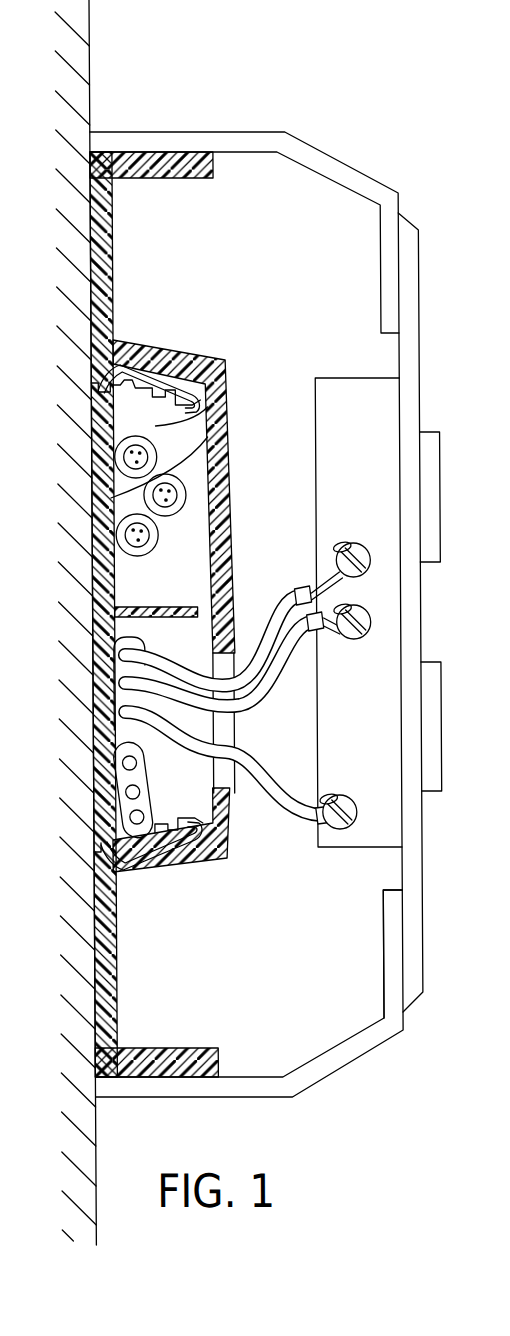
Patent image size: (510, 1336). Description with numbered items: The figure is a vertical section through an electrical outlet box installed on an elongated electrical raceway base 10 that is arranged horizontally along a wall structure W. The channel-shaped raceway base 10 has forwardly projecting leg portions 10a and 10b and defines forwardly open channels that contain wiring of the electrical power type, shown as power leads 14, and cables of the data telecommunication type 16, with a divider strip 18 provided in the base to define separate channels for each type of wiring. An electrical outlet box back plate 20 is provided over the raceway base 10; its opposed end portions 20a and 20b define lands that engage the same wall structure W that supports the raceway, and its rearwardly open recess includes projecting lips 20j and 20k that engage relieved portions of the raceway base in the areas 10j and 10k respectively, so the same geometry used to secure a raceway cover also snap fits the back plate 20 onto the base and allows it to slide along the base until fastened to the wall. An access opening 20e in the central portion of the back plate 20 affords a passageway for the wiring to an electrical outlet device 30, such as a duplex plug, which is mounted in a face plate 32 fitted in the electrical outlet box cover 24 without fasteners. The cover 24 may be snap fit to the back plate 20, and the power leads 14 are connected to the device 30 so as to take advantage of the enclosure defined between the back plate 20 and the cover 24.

The wall structure W is at (89, 43).
The electrical outlet box back plate 20 is at (278, 310).
The electrical outlet box cover 24 is at (337, 155).
The face plate 32 is at (423, 932).
The end portion of back plate 20a is at (112, 238).
The end portion of back plate 20b is at (118, 973).
The electrical outlet device 30 is at (358, 376).
The projecting lip 20k is at (97, 385).
The projecting lip 20j is at (97, 838).
The data telecommunication cables 16 is at (228, 406).
The relieved portion of raceway base 10k is at (150, 342).
The electrical raceway base 10 is at (160, 480).
The forwardly projecting leg portion 10a is at (188, 417).
The divider strip 18 is at (170, 607).
The access opening 20e is at (237, 752).
The electrical power leads 14 is at (150, 790).
The forwardly projecting leg portion 10b is at (225, 863).
The relieved portion of raceway base 10j is at (132, 880).